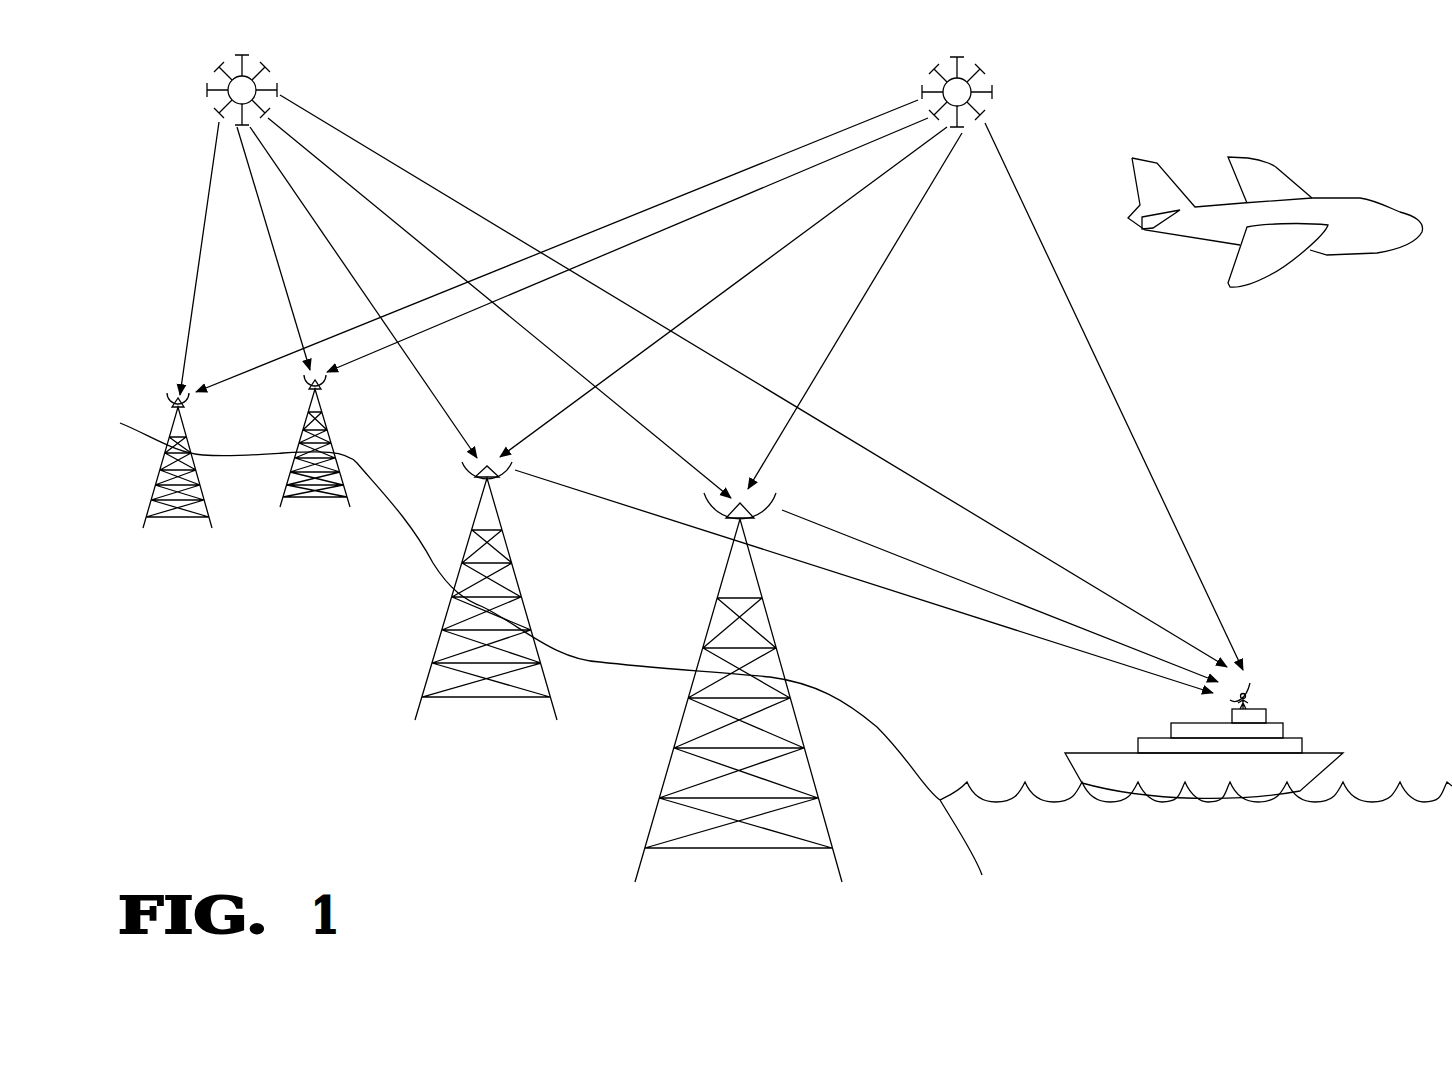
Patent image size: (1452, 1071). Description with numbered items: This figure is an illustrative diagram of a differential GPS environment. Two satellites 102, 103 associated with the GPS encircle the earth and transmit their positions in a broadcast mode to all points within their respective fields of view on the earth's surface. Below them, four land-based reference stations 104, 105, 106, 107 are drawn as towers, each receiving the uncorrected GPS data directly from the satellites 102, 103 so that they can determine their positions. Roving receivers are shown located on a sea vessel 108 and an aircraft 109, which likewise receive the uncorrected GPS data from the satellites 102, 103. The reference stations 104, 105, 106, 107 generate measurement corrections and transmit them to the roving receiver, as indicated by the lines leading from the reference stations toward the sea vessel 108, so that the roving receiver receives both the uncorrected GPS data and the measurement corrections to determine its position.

The satellite 102 is at (204, 90).
The satellite 103 is at (917, 93).
The land-based reference station 104 is at (180, 522).
The land-based reference station 105 is at (322, 507).
The land-based reference station 106 is at (487, 700).
The land-based reference station 107 is at (735, 855).
The sea vessel 108 is at (1276, 717).
The aircraft 109 is at (1328, 190).